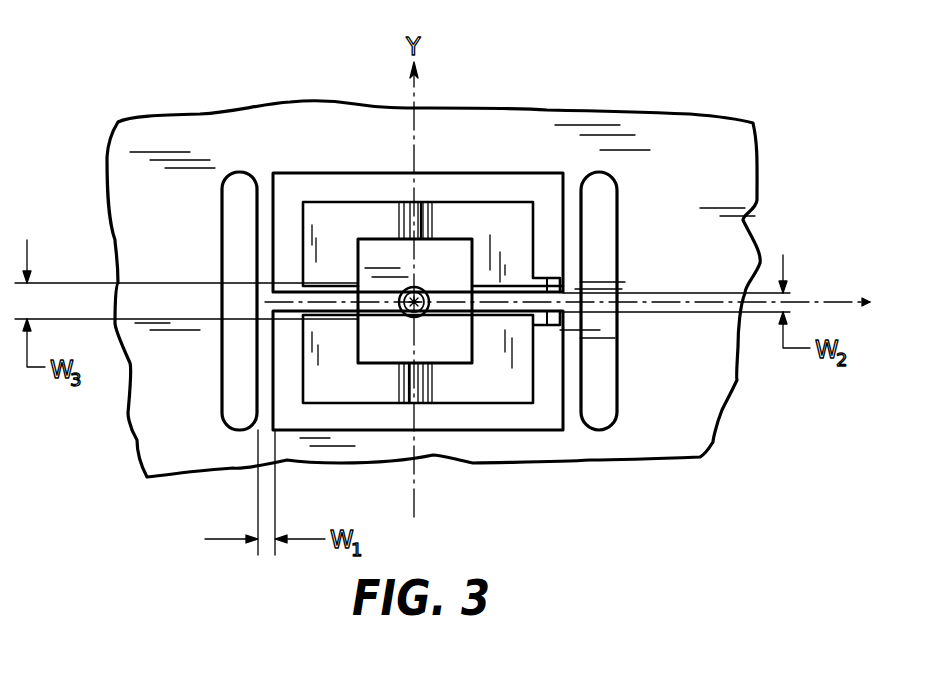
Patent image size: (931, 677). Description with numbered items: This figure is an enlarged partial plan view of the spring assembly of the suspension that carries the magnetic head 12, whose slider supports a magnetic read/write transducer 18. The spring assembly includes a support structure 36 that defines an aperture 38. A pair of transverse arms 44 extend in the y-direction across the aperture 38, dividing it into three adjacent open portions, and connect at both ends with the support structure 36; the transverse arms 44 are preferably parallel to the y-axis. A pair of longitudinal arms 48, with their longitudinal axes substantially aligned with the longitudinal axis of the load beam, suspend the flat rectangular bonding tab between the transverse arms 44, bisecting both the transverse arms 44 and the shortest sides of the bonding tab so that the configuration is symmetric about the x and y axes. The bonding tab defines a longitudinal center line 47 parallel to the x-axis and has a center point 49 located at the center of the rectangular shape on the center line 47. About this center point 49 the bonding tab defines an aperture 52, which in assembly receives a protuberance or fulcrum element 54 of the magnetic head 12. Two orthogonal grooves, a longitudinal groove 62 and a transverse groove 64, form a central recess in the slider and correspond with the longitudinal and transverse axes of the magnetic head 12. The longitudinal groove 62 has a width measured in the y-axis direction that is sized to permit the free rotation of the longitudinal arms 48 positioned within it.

The magnetic head 12 is at (508, 180).
The magnetic read/write transducer 18 is at (553, 278).
The support structure 36 is at (175, 198).
The aperture 38 is at (500, 420).
The transverse arms 44 is at (262, 196).
The longitudinal center line 47 is at (818, 300).
The longitudinal arms 48 is at (322, 302).
The center point 49 is at (402, 312).
The aperture 52 is at (427, 291).
The fulcrum element 54 is at (430, 314).
The longitudinal groove 62 is at (326, 285).
The transverse groove 64 is at (400, 236).